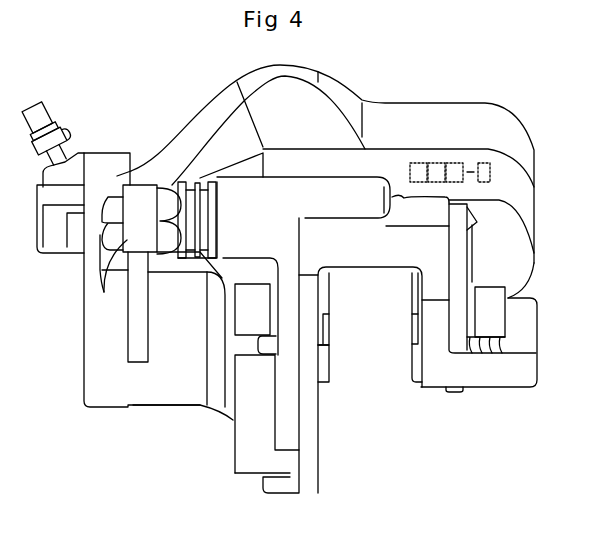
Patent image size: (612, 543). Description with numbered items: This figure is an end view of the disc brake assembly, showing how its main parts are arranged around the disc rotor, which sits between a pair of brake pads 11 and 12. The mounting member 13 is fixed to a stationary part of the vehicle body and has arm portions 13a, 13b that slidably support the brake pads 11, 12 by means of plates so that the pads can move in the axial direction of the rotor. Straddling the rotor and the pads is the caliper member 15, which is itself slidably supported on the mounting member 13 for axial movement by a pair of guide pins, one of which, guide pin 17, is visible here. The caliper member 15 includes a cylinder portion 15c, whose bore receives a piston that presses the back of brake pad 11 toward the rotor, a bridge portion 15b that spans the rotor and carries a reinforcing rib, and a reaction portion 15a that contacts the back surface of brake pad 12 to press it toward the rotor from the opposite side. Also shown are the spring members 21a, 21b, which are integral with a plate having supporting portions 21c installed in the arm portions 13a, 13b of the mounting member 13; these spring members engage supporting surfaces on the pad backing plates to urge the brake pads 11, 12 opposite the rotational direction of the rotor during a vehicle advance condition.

The brake pad 11 is at (319, 369).
The brake pad 12 is at (414, 372).
The mounting member 13 is at (255, 447).
The arm portion 13a is at (308, 291).
The arm portion 13b is at (439, 317).
The caliper member 15 is at (104, 375).
The reaction portion 15a is at (515, 282).
The bridge portion 15b is at (343, 100).
The cylinder portion 15c is at (153, 388).
The guide pin 17 is at (172, 200).
The spring member 21a is at (253, 306).
The spring member 21b is at (493, 323).
The supporting portion 21c is at (412, 340).